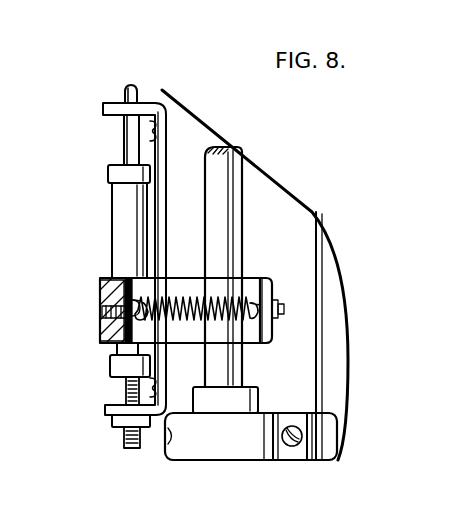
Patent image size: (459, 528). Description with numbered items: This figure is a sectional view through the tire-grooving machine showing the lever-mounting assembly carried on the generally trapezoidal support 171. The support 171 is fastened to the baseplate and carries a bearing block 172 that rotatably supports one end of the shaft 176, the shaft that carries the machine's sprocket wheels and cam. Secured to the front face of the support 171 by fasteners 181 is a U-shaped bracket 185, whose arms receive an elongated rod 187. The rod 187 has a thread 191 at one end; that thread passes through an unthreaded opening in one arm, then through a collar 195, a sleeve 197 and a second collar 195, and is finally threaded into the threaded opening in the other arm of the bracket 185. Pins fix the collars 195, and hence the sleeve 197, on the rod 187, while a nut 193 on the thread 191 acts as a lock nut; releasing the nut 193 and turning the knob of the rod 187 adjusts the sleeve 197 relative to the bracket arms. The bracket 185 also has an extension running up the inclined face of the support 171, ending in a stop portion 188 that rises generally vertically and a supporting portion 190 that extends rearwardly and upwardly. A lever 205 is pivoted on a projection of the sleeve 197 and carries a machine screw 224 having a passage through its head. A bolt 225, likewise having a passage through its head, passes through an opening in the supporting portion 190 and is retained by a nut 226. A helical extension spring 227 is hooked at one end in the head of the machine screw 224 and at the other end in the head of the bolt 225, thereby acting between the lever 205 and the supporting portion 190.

The support 171 is at (264, 177).
The bearing block 172 is at (218, 448).
The rotatable shaft 176 is at (243, 155).
The fasteners 181 is at (152, 126).
The U-shaped bracket 185 is at (160, 217).
The elongated rod 187 is at (127, 122).
The stop portion 188 is at (134, 278).
The supporting portion 190 is at (257, 279).
The thread 191 is at (130, 450).
The nut 193 is at (117, 422).
The collar 195 is at (110, 174).
The sleeve 197 is at (120, 203).
The lever 205 is at (102, 292).
The machine screw 224 is at (118, 317).
The bolt 225 is at (284, 312).
The nut 226 is at (278, 302).
The helical extension spring 227 is at (172, 298).